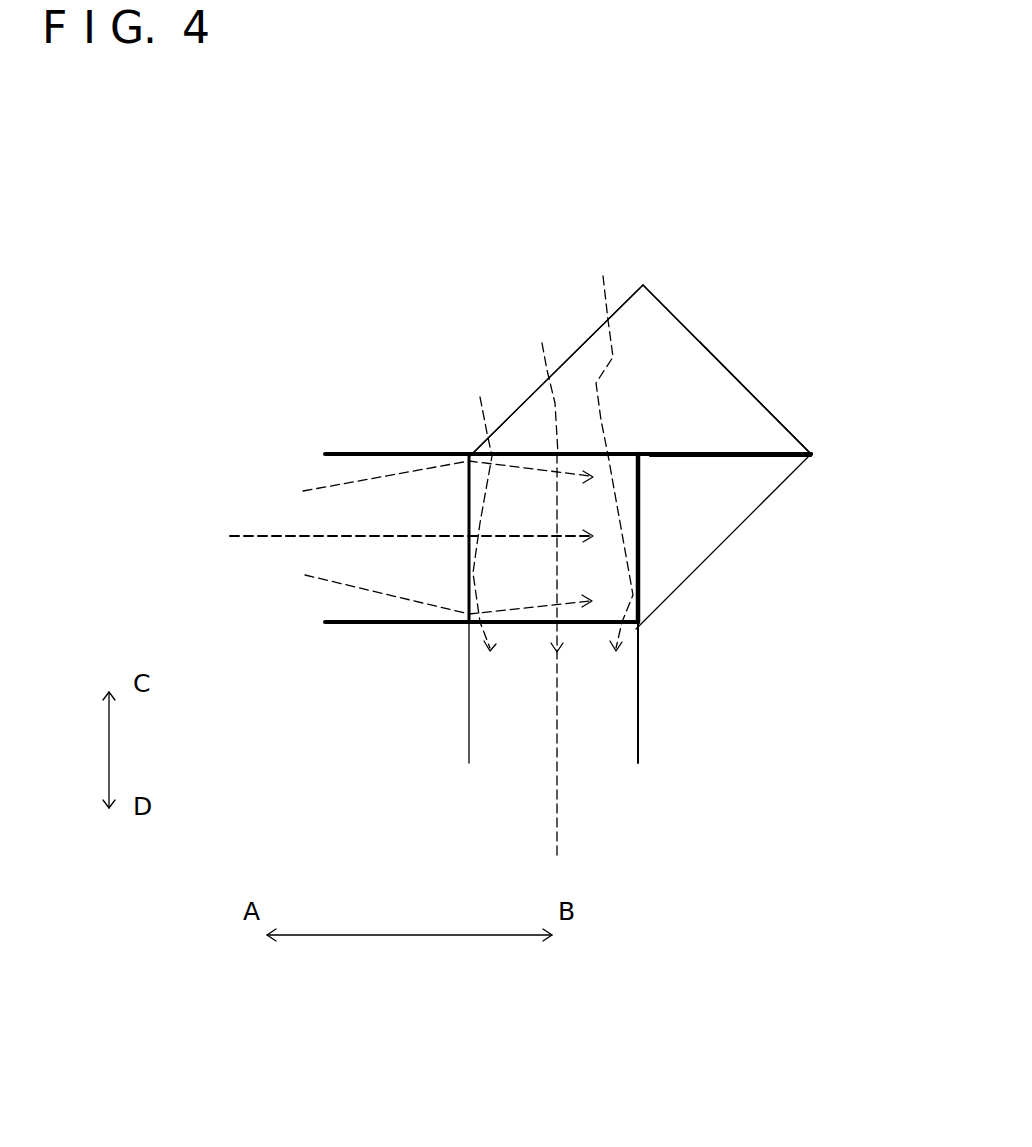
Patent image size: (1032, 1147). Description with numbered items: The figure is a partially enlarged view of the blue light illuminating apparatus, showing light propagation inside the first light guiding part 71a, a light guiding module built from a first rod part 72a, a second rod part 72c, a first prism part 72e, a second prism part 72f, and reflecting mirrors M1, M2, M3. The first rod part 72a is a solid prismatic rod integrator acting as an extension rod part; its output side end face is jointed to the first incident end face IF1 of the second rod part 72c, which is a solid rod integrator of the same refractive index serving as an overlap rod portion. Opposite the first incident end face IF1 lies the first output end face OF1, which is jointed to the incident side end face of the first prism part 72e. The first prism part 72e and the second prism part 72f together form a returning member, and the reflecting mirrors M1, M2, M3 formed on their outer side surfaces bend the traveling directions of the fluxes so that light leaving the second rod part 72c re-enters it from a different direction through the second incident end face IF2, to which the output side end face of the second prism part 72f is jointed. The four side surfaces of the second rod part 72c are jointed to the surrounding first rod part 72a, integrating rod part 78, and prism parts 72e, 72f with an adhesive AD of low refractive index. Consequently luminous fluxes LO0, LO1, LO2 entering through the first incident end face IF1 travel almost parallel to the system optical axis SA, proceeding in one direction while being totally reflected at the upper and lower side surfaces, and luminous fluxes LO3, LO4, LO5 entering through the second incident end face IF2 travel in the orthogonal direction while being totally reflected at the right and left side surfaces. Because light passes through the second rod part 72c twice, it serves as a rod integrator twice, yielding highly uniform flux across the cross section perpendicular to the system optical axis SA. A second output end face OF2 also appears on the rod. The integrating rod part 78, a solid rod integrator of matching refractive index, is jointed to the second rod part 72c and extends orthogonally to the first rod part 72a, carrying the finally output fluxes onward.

The first light guiding part 71a is at (643, 270).
The first rod part 72a is at (347, 464).
The second rod part 72c is at (613, 557).
The first prism part 72e is at (748, 477).
The second prism part 72f is at (647, 340).
The integrating rod part 78 is at (638, 739).
The reflecting mirror M1 is at (727, 539).
The reflecting mirror M2 is at (727, 368).
The reflecting mirror M3 is at (598, 324).
The first output end face OF1 is at (648, 493).
The second outer face OF2 is at (517, 624).
The first incident end face IF1 is at (468, 498).
The second incident end face IF2 is at (516, 414).
The adhesive AD is at (466, 620).
The system optical axis SA is at (265, 540).
The luminous flux LO0 is at (312, 530).
The luminous flux LO1 is at (330, 486).
The luminous flux LO2 is at (330, 581).
The luminous flux LO3 is at (541, 385).
The luminous flux LO4 is at (467, 512).
The luminous flux LO5 is at (603, 449).